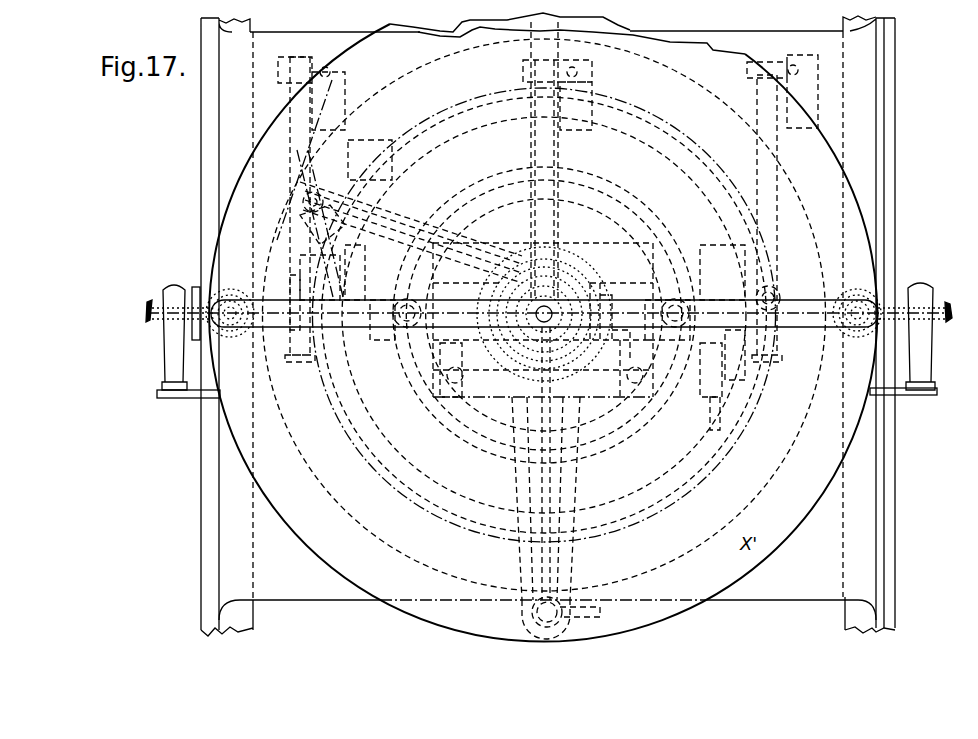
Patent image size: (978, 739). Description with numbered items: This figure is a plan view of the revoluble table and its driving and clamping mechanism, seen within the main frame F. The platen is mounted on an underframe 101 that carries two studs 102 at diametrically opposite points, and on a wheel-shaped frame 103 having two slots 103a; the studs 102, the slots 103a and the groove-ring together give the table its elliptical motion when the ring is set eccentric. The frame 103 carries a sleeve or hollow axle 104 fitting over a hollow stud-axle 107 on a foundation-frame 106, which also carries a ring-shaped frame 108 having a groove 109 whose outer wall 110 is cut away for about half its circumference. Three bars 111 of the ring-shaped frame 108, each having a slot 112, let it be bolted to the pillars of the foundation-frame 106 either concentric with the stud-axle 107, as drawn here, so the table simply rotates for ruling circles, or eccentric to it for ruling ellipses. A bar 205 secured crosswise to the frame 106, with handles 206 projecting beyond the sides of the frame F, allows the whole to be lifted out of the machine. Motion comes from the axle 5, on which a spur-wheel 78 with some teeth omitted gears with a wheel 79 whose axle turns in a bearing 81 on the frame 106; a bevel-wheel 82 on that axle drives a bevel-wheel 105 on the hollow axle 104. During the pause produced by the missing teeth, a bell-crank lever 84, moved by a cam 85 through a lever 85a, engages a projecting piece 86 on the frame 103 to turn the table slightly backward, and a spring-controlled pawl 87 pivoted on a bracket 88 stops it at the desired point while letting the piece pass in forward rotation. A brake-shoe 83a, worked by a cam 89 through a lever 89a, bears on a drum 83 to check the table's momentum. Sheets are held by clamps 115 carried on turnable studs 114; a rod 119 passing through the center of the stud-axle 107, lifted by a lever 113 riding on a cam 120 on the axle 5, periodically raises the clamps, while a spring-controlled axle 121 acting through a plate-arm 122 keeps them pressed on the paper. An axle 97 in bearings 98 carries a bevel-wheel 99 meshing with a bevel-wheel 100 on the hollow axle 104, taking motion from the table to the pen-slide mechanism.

The main frame F is at (203, 158).
The axle 5 is at (160, 308).
The spur-wheel 78 is at (715, 426).
The spur-wheel 79 is at (705, 361).
The bearing 81 is at (612, 331).
The bevel-wheel 82 is at (600, 341).
The drum 83 is at (735, 356).
The brake-shoe 83a is at (760, 276).
The bell-crank lever 84 is at (305, 281).
The cam 85 is at (296, 351).
The lever 85a is at (300, 169).
The projecting piece 86 is at (310, 269).
The spring-controlled pawl 87 is at (318, 233).
The bracket 88 is at (306, 204).
The cam 89 is at (775, 351).
The lever 89a is at (772, 141).
The axle 97 is at (545, 181).
The bearings 98 is at (544, 315).
The bevel-wheel 99 is at (520, 283).
The bevel-wheel 100 is at (560, 335).
The underframe 101 is at (550, 315).
The studs 102 is at (407, 312).
The wheel-shaped frame 103 is at (380, 161).
The slots 103a is at (380, 311).
The sleeve or hollow axle 104 is at (553, 281).
The bevel-wheel 105 is at (543, 315).
The foundation-frame 106 is at (388, 219).
The hollow stud-axle 107 is at (540, 325).
The ring-shaped frame 108 is at (544, 315).
The groove 109 is at (543, 315).
The outer wall 110 is at (544, 317).
The bars 111 is at (578, 491).
The slots 112 is at (455, 346).
The lever 113 is at (538, 147).
The studs 114 is at (230, 321).
The clamps 115 is at (282, 323).
The rod 119 is at (543, 317).
The cam 120 is at (535, 350).
The spring-controlled axle 121 is at (355, 251).
The plate-arm 122 is at (607, 256).
The bar 205 is at (185, 401).
The handles 206 is at (165, 343).